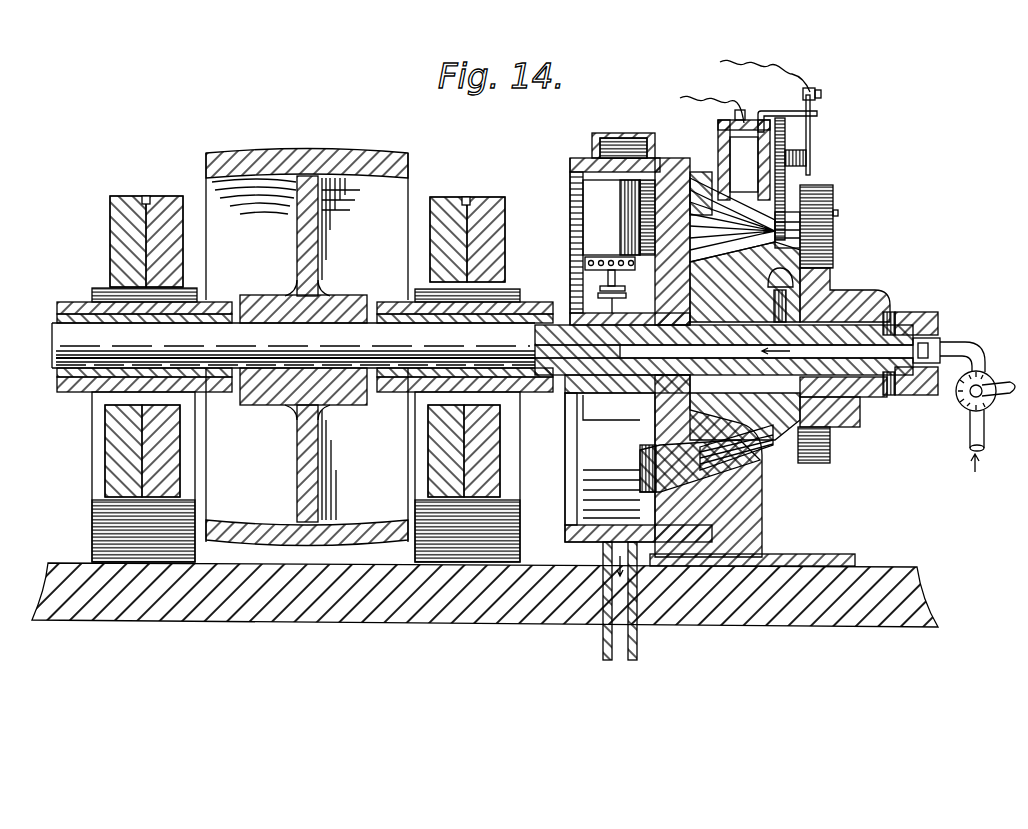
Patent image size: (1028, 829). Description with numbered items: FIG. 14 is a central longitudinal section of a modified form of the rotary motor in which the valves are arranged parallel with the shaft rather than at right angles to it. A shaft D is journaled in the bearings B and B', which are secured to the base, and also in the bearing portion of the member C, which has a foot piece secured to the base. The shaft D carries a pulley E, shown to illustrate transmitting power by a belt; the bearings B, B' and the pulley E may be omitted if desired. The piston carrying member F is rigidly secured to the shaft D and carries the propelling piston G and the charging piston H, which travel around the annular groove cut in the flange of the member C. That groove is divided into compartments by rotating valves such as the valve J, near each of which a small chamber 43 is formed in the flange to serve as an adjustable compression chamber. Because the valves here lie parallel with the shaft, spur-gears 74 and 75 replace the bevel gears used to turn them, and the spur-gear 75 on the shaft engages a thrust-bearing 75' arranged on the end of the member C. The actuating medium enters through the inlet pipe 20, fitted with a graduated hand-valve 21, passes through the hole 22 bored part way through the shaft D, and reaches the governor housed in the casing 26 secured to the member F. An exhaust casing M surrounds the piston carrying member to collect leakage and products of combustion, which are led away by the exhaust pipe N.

The charging piston H is at (392, 627).
The shaft D is at (65, 342).
The bearing B is at (123, 379).
The bearing B' is at (480, 379).
The pulley E is at (322, 150).
The piston carrying member F is at (572, 170).
The exhaust casing M is at (622, 135).
The casing 26 is at (590, 225).
The small chamber 43 is at (743, 182).
The valve J is at (785, 195).
The spur-gear 74 is at (835, 234).
The spur-gear 75 is at (852, 292).
The hole 22 is at (897, 388).
The thrust-bearing 75' is at (847, 422).
The inlet pipe 20 is at (990, 387).
The graduated hand-valve 21 is at (984, 431).
The member C is at (740, 513).
The propelling piston G is at (762, 478).
The exhaust pipe N is at (618, 660).